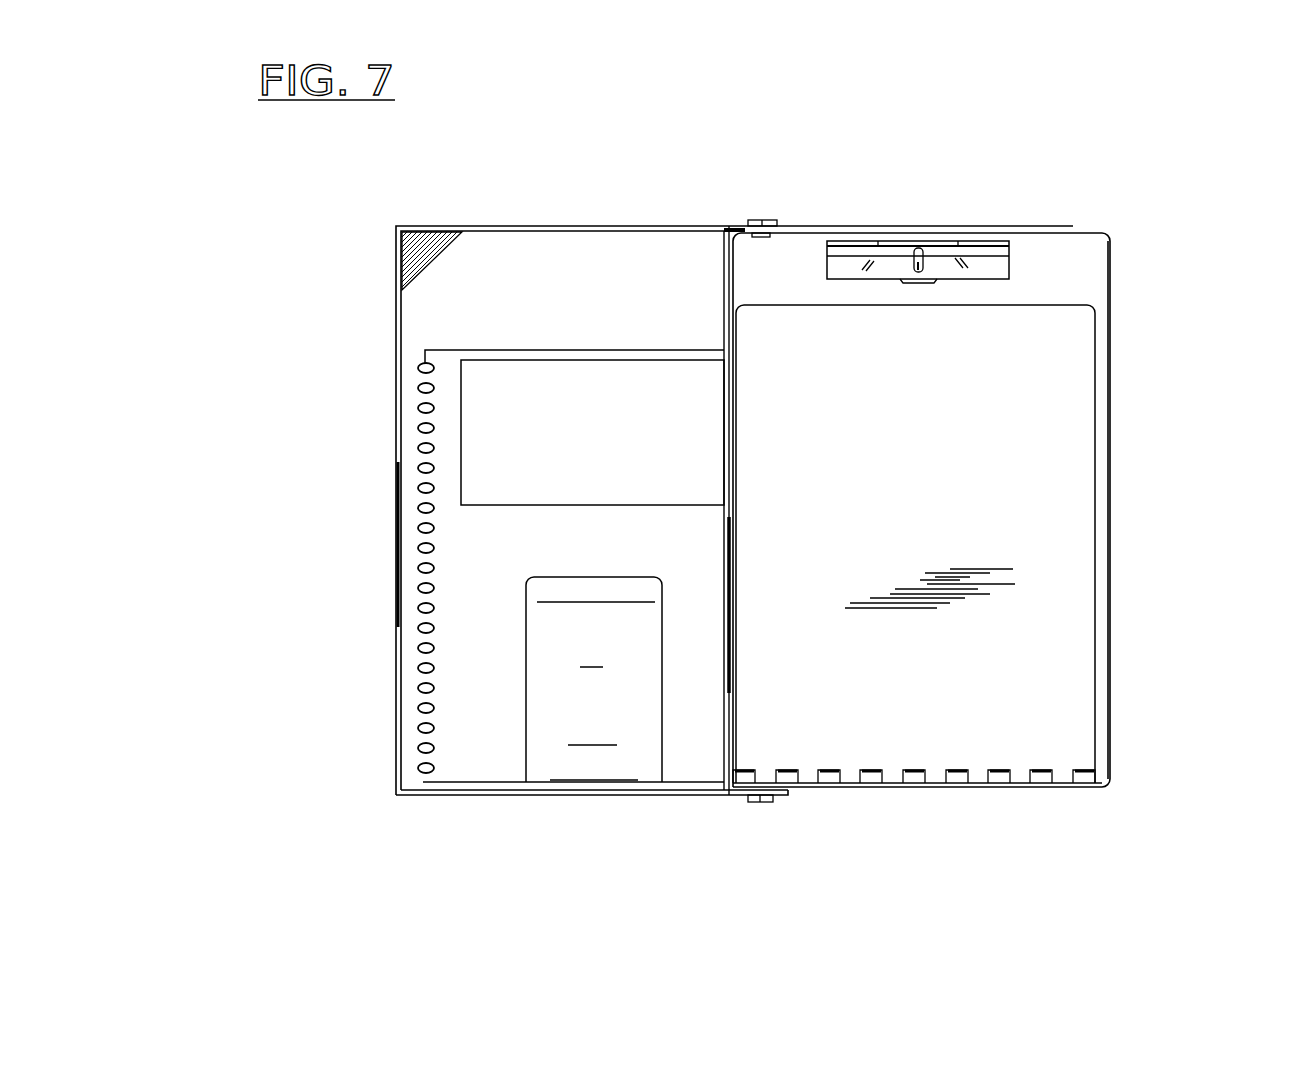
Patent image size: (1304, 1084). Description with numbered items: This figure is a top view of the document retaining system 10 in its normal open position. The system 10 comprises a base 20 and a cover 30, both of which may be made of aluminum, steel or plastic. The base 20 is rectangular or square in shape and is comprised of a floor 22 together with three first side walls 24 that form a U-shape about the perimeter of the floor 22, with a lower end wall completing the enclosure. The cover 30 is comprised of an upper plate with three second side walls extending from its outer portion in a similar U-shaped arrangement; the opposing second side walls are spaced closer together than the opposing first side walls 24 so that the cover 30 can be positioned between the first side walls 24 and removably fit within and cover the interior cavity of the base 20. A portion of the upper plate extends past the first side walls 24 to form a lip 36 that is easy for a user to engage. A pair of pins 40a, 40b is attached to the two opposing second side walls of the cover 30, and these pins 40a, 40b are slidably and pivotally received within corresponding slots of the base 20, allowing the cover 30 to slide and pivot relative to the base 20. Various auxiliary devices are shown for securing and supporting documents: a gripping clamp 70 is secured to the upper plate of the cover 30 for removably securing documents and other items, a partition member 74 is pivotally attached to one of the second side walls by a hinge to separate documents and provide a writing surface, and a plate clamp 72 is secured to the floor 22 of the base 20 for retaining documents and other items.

The document retaining system 10 is at (1088, 140).
The base 20 is at (484, 419).
The floor 22 is at (500, 308).
The first side walls 24 is at (398, 668).
The cover 30 is at (994, 410).
The lip 36 is at (1103, 637).
The pin 40a is at (768, 803).
The pin 40b is at (758, 222).
The gripping clamp 70 is at (982, 259).
The plate clamp 72 is at (553, 730).
The partition member 74 is at (1045, 395).